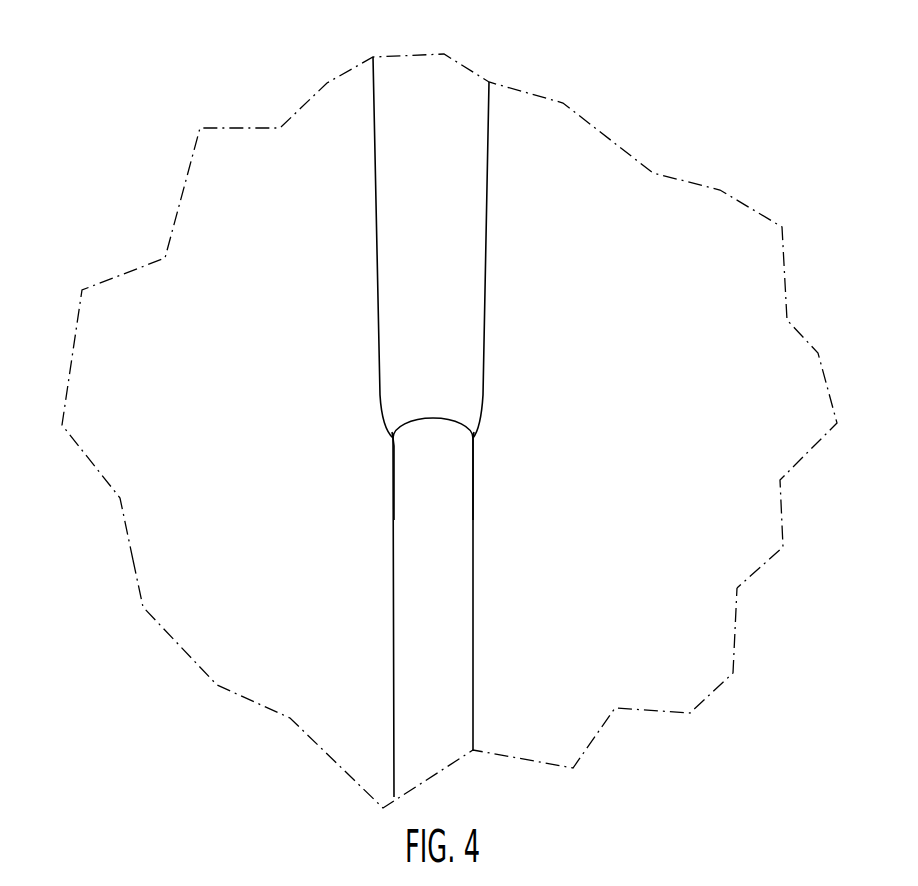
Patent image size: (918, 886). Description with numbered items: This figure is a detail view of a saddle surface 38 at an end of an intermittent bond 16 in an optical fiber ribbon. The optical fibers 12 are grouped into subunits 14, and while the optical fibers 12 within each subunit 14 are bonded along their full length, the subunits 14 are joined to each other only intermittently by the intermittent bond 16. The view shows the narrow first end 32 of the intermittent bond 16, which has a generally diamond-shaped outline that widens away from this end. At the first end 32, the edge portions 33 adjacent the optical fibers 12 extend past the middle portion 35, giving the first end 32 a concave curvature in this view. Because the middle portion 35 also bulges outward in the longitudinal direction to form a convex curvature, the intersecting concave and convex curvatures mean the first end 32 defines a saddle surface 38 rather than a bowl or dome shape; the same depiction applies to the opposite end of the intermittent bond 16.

The optical fiber 12 is at (138, 297).
The subunit 14 is at (245, 718).
The intermittent bond 16 is at (430, 102).
The first end 32 is at (485, 460).
The edge portion 33 is at (382, 437).
The middle portion 35 is at (437, 415).
The saddle surface 38 is at (428, 430).